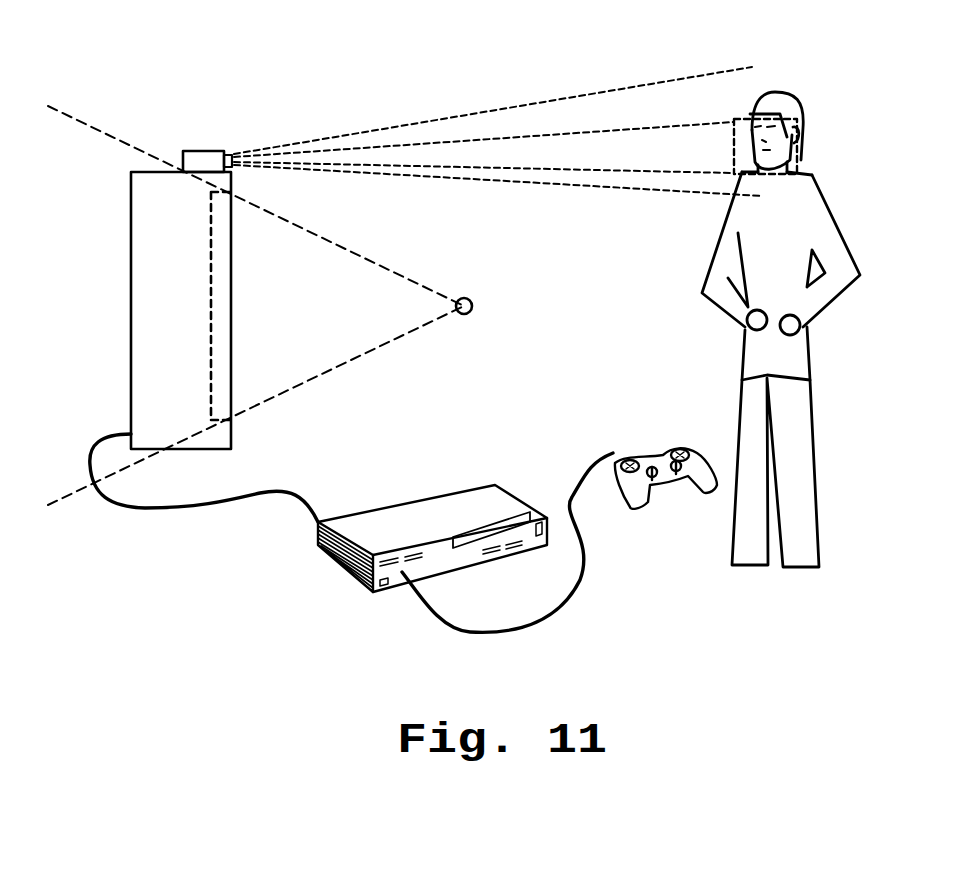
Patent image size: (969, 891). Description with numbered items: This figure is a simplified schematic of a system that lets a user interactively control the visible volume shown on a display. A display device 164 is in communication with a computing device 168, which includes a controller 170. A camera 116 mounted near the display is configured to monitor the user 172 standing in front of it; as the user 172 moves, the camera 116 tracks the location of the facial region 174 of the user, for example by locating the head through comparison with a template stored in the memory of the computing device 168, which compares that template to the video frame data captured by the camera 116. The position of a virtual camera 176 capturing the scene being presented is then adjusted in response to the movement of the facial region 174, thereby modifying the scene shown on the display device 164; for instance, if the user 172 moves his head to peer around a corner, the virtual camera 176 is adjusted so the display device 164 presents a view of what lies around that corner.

The camera 116 is at (205, 151).
The display device 164 is at (131, 262).
The computing device 168 is at (335, 572).
The controller 170 is at (645, 505).
The user 172 is at (820, 185).
The facial region 174 is at (745, 119).
The virtual camera 176 is at (472, 302).